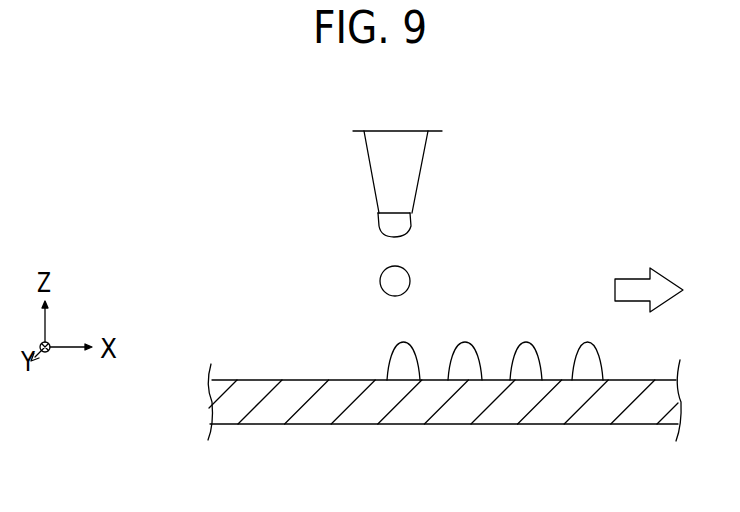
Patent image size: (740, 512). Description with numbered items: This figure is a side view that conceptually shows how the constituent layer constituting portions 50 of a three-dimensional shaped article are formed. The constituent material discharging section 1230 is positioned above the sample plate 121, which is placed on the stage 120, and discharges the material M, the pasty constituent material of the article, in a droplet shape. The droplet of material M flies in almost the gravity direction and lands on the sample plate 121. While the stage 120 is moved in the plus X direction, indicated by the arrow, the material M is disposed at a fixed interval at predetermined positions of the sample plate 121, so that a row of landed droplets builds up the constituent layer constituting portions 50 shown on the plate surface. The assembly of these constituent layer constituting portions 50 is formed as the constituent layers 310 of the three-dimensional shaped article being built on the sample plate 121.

The constituent material discharging section 1230 is at (410, 148).
The material M is at (412, 278).
The constituent layer constituting portions 50 is at (495, 330).
The constituent layers 310 is at (527, 342).
The sample plate 121 is at (429, 371).
The stage 120 is at (253, 380).